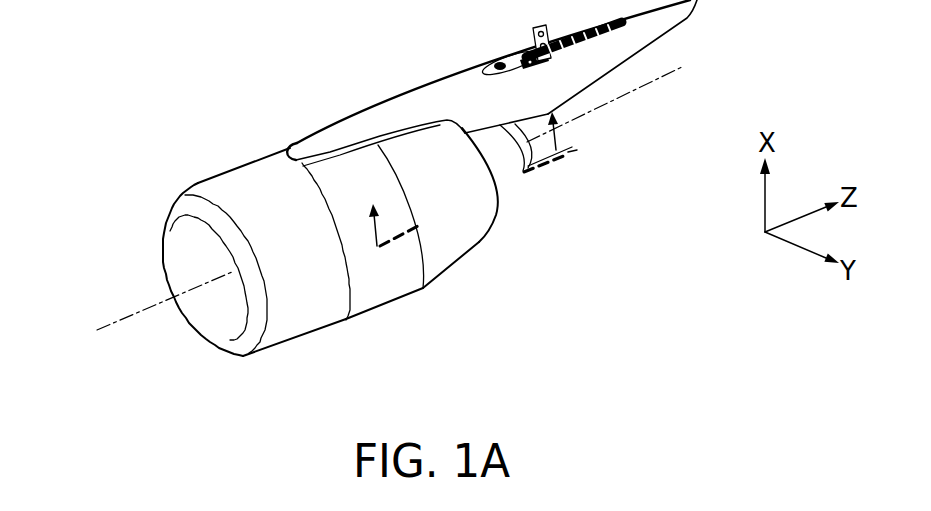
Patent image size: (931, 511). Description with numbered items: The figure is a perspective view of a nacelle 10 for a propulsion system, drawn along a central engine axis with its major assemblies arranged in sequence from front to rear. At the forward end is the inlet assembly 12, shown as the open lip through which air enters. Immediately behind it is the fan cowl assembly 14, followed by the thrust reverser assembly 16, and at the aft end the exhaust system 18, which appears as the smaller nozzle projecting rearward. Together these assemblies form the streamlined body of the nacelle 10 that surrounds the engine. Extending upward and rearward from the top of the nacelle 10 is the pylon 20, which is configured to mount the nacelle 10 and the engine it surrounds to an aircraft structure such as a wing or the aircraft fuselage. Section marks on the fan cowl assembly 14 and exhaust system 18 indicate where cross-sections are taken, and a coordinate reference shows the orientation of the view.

The nacelle 10 is at (172, 108).
The inlet assembly 12 is at (302, 322).
The fan cowl assembly 14 is at (392, 273).
The thrust reverser assembly 16 is at (460, 227).
The exhaust system 18 is at (505, 177).
The pylon 20 is at (590, 63).